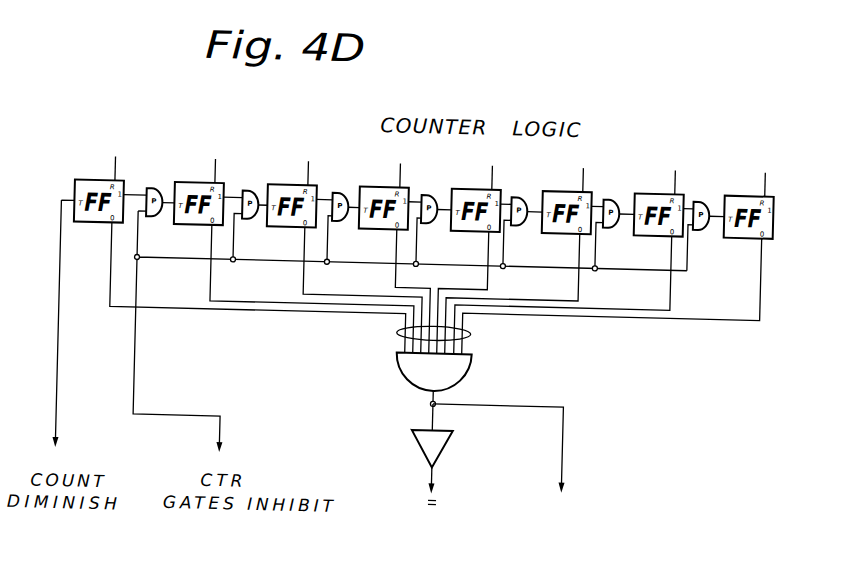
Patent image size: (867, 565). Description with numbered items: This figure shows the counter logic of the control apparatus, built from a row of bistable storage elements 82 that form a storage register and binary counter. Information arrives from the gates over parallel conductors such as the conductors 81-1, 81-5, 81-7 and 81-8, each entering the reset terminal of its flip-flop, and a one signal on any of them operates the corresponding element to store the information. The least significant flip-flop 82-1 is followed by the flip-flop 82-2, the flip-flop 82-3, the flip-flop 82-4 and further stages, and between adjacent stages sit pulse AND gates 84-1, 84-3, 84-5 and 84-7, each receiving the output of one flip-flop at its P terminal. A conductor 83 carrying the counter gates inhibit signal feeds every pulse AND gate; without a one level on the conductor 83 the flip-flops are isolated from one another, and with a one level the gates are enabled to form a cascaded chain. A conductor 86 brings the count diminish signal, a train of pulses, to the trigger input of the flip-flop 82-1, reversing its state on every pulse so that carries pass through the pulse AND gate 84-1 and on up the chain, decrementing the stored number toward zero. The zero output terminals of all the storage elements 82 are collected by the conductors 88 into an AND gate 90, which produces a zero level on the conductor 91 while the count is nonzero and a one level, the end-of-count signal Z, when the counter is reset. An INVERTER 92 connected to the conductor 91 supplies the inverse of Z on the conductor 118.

The bistable storage elements 82 is at (56, 166).
The least significant flip-flop 82-1 is at (84, 181).
The flip-flop 82-2 is at (192, 181).
The flip-flop 82-3 is at (272, 181).
The flip-flop 82-4 is at (371, 181).
The parallel conductor 81-1 is at (101, 181).
The parallel conductor 81-5 is at (488, 180).
The parallel conductor 81-7 is at (672, 170).
The parallel conductor 81-8 is at (764, 164).
The pulse AND gate 84-1 is at (151, 188).
The pulse AND gate 84-3 is at (338, 188).
The pulse AND gate 84-5 is at (514, 188).
The pulse AND gate 84-7 is at (700, 188).
The conductor 86 is at (60, 366).
The conductor 83 is at (137, 365).
The conductors 88 is at (472, 326).
The AND gate 90 is at (402, 366).
The INVERTER 92 is at (416, 434).
The conductor 118 is at (438, 468).
The conductor 91 is at (570, 405).